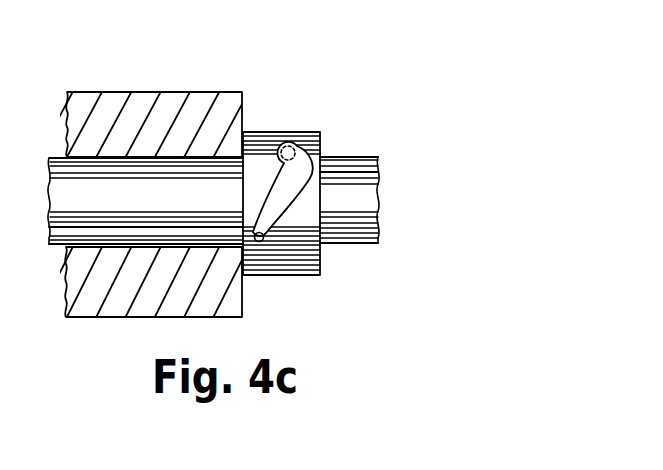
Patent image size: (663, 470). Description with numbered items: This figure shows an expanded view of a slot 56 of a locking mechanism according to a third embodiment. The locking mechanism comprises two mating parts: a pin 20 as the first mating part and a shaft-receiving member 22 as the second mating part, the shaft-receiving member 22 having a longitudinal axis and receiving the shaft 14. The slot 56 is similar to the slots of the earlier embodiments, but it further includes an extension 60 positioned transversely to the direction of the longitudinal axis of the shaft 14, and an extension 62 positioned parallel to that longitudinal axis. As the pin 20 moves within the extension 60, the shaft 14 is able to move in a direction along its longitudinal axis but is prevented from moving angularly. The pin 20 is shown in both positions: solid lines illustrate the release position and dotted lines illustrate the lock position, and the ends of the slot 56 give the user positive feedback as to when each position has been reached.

The shaft 14 is at (346, 156).
The shaft-receiving member 22 is at (257, 126).
The extension 62 is at (291, 146).
The extension 60 is at (320, 156).
The slot 56 is at (277, 193).
The pin 20 is at (262, 240).